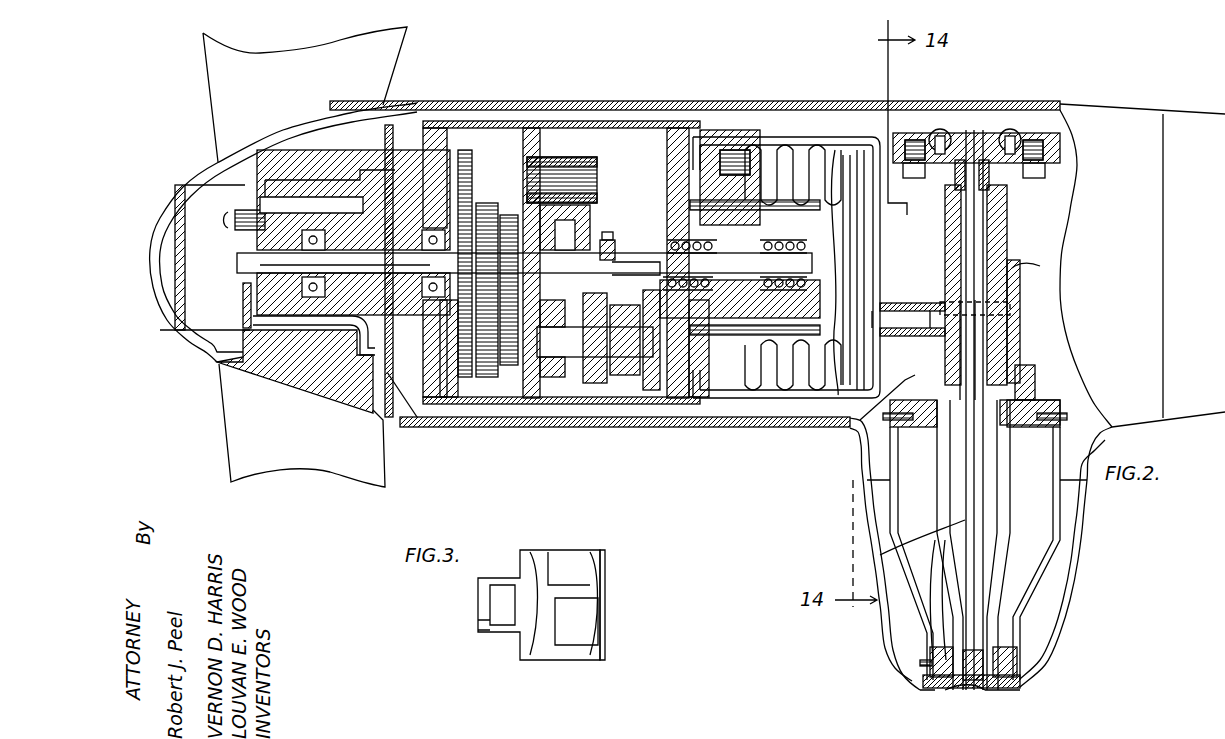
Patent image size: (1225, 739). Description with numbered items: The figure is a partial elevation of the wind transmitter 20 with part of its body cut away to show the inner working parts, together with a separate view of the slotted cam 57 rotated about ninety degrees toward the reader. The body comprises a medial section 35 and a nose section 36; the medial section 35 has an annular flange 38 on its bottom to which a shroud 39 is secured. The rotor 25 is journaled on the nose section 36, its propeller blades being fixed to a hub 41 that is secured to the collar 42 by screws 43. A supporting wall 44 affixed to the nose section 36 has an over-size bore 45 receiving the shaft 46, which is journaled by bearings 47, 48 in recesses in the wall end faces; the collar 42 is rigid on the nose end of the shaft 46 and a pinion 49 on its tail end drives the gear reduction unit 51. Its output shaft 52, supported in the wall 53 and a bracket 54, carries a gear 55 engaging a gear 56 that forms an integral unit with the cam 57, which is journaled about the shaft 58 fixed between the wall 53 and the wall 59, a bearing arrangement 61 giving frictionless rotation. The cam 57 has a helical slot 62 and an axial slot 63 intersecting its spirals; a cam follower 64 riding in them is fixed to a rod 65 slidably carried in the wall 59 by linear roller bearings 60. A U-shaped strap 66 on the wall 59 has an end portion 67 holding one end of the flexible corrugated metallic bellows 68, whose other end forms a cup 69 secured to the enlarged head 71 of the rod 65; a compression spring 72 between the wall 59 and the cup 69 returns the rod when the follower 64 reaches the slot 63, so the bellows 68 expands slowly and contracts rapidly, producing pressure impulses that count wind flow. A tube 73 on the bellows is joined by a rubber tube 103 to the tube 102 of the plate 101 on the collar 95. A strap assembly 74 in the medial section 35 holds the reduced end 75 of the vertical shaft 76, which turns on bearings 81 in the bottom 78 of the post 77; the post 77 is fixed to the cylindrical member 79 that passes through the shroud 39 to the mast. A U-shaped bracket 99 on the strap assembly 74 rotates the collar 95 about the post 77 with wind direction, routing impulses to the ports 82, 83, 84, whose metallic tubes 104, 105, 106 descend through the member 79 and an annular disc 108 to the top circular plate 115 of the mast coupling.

In FIG. 2, the transmitter 20 is at (670, 103).
In FIG. 2, the rotor 25 is at (230, 90).
In FIG. 2, the medial section 35 is at (872, 110).
In FIG. 2, the nose section 36 is at (556, 104).
In FIG. 2, the annular flange 38 is at (850, 432).
In FIG. 2, the shroud 39 is at (868, 510).
In FIG. 2, the hub 41 is at (250, 200).
In FIG. 2, the collar 42 is at (247, 300).
In FIG. 2, the screws 43 is at (247, 237).
In FIG. 2, the supporting wall 44 is at (423, 200).
In FIG. 2, the over-size bore 45 is at (337, 253).
In FIG. 2, the shaft 46 is at (250, 262).
In FIG. 2, the bearing 47 is at (318, 240).
In FIG. 2, the bearing 48 is at (367, 207).
In FIG. 2, the pinion 49 is at (470, 280).
In FIG. 2, the gear reduction unit 51 is at (498, 200).
In FIG. 2, the output shaft 52 is at (592, 250).
In FIG. 2, the wall 53 is at (540, 146).
In FIG. 2, the bracket 54 is at (588, 165).
In FIG. 2, the gear 55 is at (585, 235).
In FIG. 2, the gear 56 is at (525, 397).
In FIG. 2, the cam 57 is at (603, 383).
In FIG. 2, the shaft 58 is at (570, 357).
In FIG. 2, the wall 59 is at (690, 397).
In FIG. 2, the linear roller bearings 60 is at (690, 230).
In FIG. 2, the bearing arrangement 61 is at (585, 365).
In FIG. 2, the helical slot 62 is at (650, 395).
In FIG. 3, the helical slot 62 is at (602, 650).
In FIG. 3, the axial slot 63 is at (580, 590).
In FIG. 2, the cam follower 64 is at (615, 375).
In FIG. 2, the rod 65 is at (625, 262).
In FIG. 2, the U-shaped strap 66 is at (795, 160).
In FIG. 2, the end portion 67 is at (880, 222).
In FIG. 2, the flexible corrugated metallic bellows 68 is at (840, 150).
In FIG. 2, the cup 69 is at (757, 160).
In FIG. 2, the enlarged head 71 is at (775, 235).
In FIG. 2, the compression spring 72 is at (738, 330).
In FIG. 2, the tube 73 is at (900, 305).
In FIG. 2, the strap assembly 74 is at (1010, 245).
In FIG. 2, the reduced end 75 is at (970, 140).
In FIG. 2, the vertical shaft 76 is at (975, 180).
In FIG. 2, the post 77 is at (1008, 235).
In FIG. 2, the bottom 78 is at (1038, 400).
In FIG. 2, the cylindrical member 79 is at (1055, 465).
In FIG. 2, the bearings 81 is at (1015, 352).
In FIG. 2, the port 82 is at (925, 420).
In FIG. 2, the port 83 is at (1013, 305).
In FIG. 2, the port 84 is at (1030, 413).
In FIG. 2, the collar 95 is at (1050, 280).
In FIG. 2, the U-shaped bracket 99 is at (955, 168).
In FIG. 2, the plate 101 is at (1000, 335).
In FIG. 2, the tube 102 is at (972, 322).
In FIG. 2, the rubber tube 103 is at (910, 380).
In FIG. 2, the metallic tube 104 is at (945, 500).
In FIG. 2, the metallic tube 105 is at (880, 555).
In FIG. 2, the metallic tube 106 is at (1000, 520).
In FIG. 2, the annular disc 108 is at (938, 555).
In FIG. 2, the top circular plate 115 is at (920, 685).